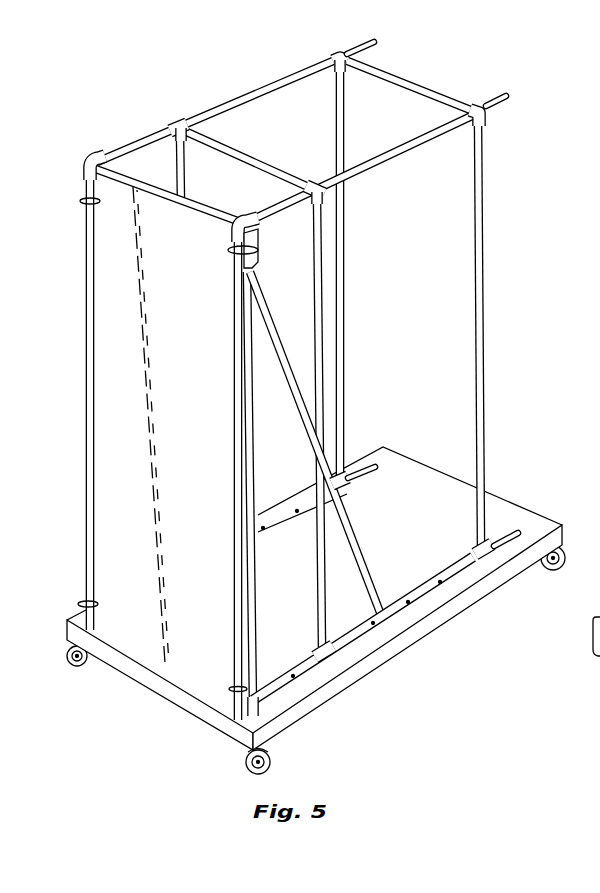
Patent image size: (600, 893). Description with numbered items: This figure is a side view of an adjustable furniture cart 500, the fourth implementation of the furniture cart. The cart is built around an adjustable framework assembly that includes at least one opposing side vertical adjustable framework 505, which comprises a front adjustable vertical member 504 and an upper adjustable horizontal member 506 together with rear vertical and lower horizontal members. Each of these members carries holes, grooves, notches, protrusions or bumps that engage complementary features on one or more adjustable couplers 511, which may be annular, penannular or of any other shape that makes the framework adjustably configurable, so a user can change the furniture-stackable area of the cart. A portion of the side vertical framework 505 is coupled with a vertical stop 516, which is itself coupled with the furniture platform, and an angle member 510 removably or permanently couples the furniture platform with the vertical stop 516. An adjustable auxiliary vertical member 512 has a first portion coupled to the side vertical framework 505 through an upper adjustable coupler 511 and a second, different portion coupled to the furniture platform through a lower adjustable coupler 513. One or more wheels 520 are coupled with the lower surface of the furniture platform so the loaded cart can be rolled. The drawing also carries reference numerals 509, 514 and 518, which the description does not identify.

The adjustable furniture cart 500 is at (308, 402).
The front adjustable vertical member 504 is at (483, 213).
The opposing side vertical adjustable framework 505 is at (486, 102).
The upper adjustable horizontal member 506 is at (428, 128).
The base T connector 509 is at (493, 556).
The angle member 510 is at (333, 662).
The adjustable coupler 511 is at (318, 182).
The adjustable auxiliary vertical member 512 is at (322, 277).
The lower adjustable coupler 513 is at (353, 557).
The top rail 514 is at (222, 140).
The vertical stop 516 is at (103, 428).
The retaining clip 518 is at (80, 201).
The caster 520 is at (272, 755).